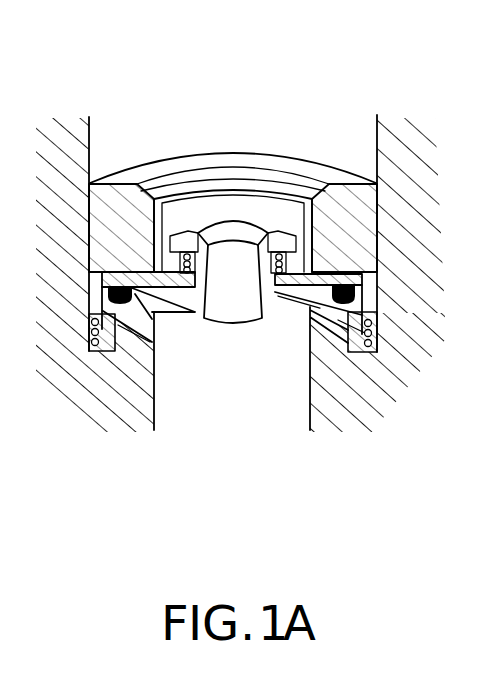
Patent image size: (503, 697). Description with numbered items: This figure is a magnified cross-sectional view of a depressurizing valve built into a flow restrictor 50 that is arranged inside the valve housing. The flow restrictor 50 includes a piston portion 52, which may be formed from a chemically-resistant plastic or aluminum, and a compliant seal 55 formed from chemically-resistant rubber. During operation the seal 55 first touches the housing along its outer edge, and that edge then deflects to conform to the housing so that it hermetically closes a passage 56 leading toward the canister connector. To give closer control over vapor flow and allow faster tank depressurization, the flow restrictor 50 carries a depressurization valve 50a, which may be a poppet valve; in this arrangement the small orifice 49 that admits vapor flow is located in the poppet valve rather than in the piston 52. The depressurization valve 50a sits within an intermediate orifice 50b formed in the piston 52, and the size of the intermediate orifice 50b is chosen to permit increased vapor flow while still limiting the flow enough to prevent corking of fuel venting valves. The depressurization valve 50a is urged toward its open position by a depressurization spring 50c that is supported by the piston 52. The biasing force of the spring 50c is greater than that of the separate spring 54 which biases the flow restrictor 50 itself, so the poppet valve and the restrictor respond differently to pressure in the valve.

The flow restrictor 50 is at (247, 213).
The passage 56 is at (323, 124).
The small orifice 49 is at (238, 257).
The depressurization valve 50a is at (284, 242).
The intermediate orifice 50b is at (173, 300).
The depressurization spring 50c is at (273, 302).
The piston portion 52 is at (368, 276).
The spring 54 is at (89, 347).
The compliant seal 55 is at (157, 312).